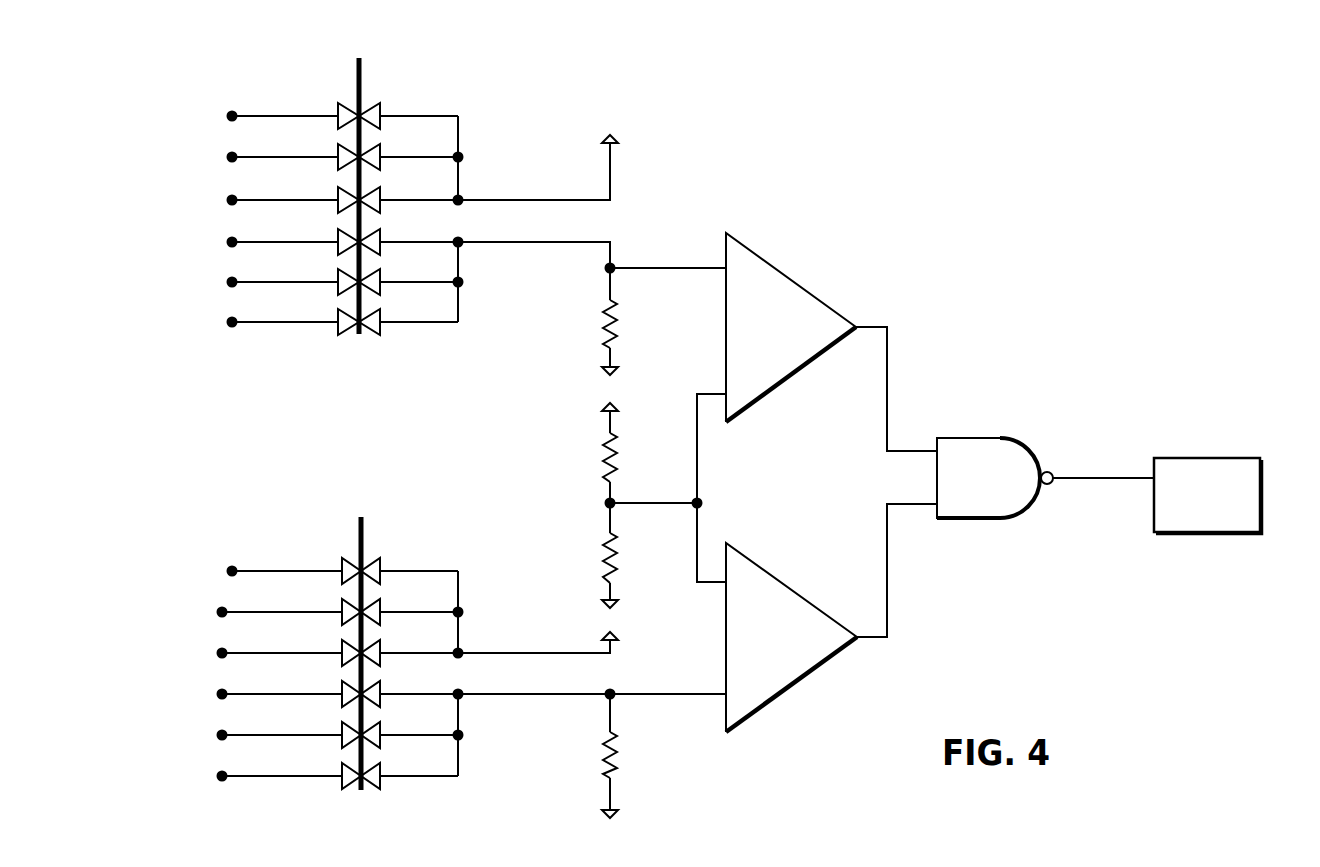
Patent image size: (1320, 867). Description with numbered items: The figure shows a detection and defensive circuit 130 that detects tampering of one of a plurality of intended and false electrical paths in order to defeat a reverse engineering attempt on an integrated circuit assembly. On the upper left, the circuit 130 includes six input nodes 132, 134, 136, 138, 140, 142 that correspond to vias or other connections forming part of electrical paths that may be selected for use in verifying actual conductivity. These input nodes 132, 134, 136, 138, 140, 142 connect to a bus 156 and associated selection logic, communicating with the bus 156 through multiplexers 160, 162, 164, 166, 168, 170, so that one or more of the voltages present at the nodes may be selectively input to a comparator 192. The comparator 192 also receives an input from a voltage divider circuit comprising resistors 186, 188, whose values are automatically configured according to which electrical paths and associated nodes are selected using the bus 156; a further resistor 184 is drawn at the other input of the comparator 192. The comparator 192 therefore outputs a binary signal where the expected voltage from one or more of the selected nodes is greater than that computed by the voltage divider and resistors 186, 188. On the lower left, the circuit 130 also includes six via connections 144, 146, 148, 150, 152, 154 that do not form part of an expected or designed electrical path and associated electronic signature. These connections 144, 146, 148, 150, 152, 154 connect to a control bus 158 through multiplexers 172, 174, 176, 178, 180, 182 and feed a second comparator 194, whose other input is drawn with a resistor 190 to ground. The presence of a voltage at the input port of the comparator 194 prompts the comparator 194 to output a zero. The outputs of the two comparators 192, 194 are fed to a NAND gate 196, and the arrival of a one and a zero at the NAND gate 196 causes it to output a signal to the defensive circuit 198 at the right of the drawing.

The detection and defensive circuit 130 is at (214, 44).
The input node 132 is at (230, 116).
The input node 134 is at (230, 157).
The input node 136 is at (230, 200).
The input node 138 is at (230, 242).
The input node 140 is at (230, 282).
The input node 142 is at (230, 322).
The via connection 144 is at (230, 571).
The via connection 146 is at (220, 612).
The via connection 148 is at (220, 653).
The via connection 150 is at (220, 694).
The via connection 152 is at (220, 735).
The via connection 154 is at (220, 776).
The bus 156 is at (359, 76).
The control bus 158 is at (361, 534).
The multiplexer 160 is at (383, 106).
The multiplexer 162 is at (383, 147).
The multiplexer 164 is at (383, 190).
The multiplexer 166 is at (383, 232).
The multiplexer 168 is at (383, 272).
The multiplexer 170 is at (383, 312).
The multiplexer 172 is at (383, 560).
The multiplexer 174 is at (383, 600).
The multiplexer 176 is at (383, 641).
The multiplexer 178 is at (383, 683).
The multiplexer 180 is at (383, 723).
The multiplexer 182 is at (383, 764).
The resistor 184 is at (607, 312).
The resistor 186 is at (607, 452).
The resistor 188 is at (607, 550).
The resistor 190 is at (620, 756).
The comparator 192 is at (800, 284).
The comparator 194 is at (808, 678).
The NAND gate 196 is at (957, 437).
The defensive circuit 198 is at (1195, 532).